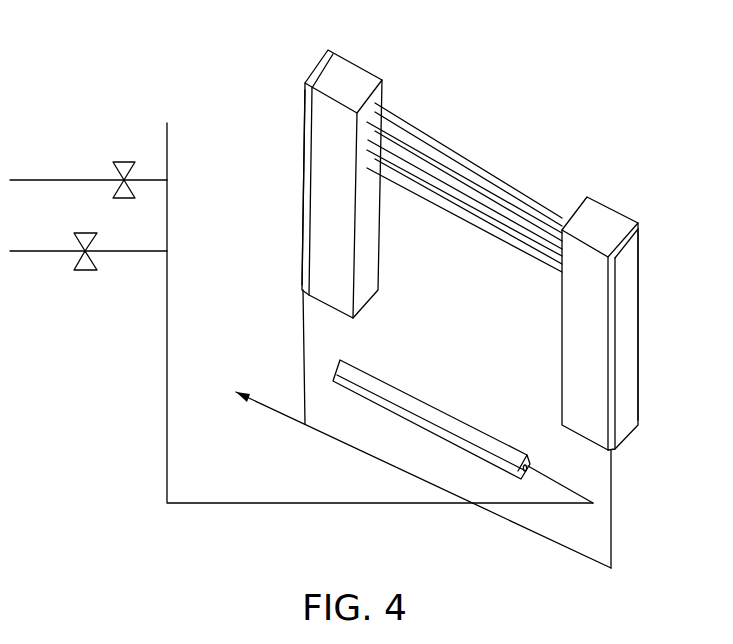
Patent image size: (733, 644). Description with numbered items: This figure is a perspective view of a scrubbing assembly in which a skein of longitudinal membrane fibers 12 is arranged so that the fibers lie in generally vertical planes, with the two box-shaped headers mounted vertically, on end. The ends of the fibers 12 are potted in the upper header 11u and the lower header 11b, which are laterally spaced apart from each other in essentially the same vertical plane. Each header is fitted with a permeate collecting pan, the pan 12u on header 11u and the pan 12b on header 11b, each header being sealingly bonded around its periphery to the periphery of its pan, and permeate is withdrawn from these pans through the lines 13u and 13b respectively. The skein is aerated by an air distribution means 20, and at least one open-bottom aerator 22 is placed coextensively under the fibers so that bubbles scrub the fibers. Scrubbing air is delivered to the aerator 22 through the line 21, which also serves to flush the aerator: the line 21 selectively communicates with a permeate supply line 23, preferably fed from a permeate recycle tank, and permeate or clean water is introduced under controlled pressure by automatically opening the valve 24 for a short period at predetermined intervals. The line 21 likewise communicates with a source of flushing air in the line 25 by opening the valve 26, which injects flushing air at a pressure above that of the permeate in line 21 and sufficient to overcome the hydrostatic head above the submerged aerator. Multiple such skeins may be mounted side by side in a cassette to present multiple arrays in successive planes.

The upper header 11u is at (316, 166).
The lower header 11b is at (638, 305).
The fibers 12 is at (489, 163).
The permeate collecting pan 12u is at (305, 142).
The permeate collecting pan 12b is at (637, 328).
The permeate withdrawal line 13u is at (305, 362).
The permeate withdrawal line 13b is at (612, 518).
The air distribution means 20 is at (124, 403).
The line 21 is at (168, 463).
The aerator 22 is at (405, 392).
The permeate supply line 23 is at (85, 270).
The valve 24 is at (23, 253).
The flushing air line 25 is at (50, 180).
The valve 26 is at (124, 162).